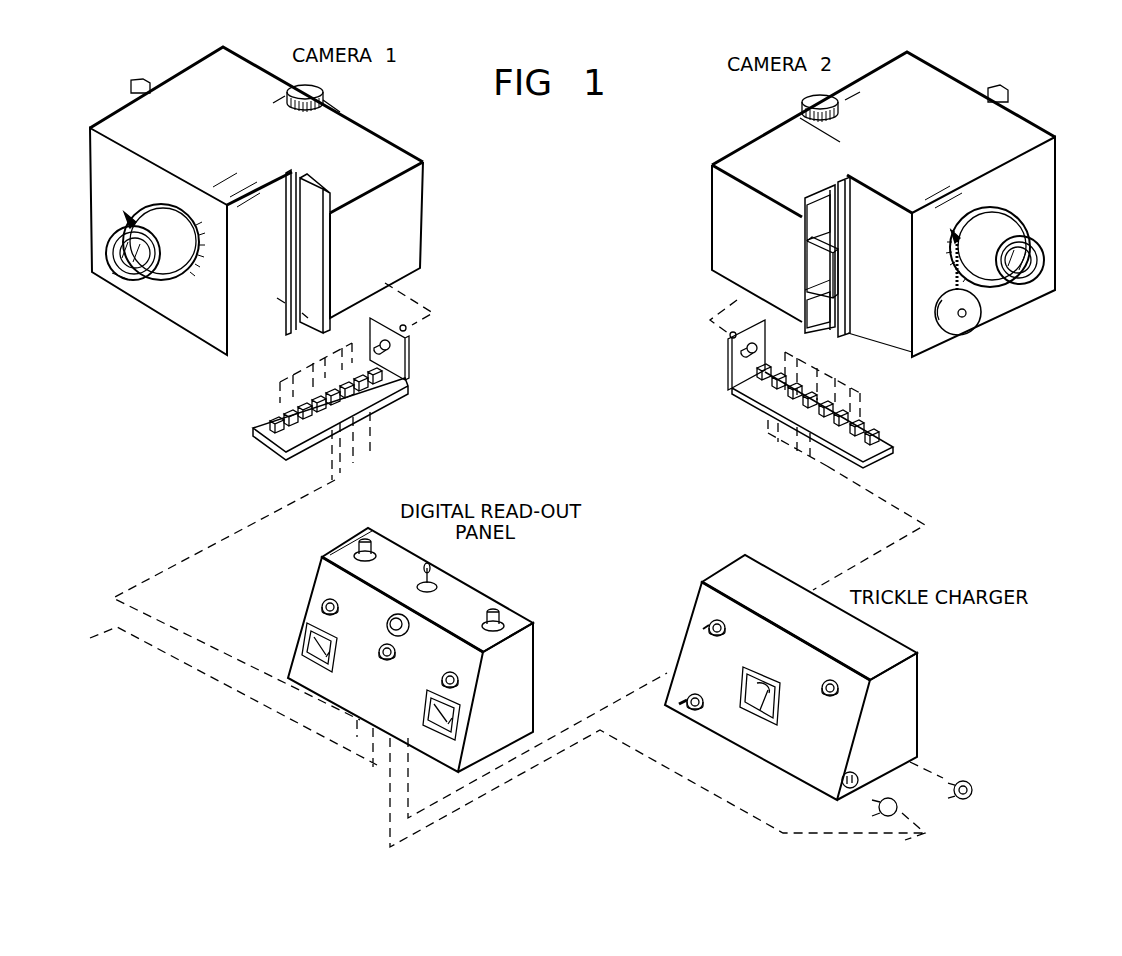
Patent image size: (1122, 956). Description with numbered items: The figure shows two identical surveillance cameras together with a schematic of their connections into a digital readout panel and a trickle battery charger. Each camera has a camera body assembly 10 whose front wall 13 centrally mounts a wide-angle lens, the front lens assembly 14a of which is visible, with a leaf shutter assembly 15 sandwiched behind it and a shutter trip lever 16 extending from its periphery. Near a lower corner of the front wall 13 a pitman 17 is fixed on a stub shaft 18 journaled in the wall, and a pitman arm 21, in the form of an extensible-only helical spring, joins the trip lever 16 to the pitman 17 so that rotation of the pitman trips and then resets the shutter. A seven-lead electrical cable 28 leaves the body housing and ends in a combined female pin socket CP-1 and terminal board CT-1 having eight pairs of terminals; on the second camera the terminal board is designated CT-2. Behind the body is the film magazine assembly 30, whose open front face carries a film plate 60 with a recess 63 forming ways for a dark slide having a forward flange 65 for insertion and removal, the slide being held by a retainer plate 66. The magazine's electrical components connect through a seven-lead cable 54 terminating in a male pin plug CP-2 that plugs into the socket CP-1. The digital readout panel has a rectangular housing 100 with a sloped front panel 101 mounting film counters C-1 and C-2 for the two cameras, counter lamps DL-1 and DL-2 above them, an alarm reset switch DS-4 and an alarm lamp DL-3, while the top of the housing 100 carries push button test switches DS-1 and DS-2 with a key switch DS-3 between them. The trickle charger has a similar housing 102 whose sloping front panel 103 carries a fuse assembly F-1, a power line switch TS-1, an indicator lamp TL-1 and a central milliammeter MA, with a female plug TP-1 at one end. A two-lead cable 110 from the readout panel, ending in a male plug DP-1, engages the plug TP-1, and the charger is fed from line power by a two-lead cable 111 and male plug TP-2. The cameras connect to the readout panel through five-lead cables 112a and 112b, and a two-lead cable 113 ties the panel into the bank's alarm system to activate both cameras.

The camera body assembly 10 is at (212, 156).
The front wall 13 is at (172, 316).
The front lens assembly 14a is at (130, 265).
The leaf shutter assembly 15 is at (195, 266).
The shutter trip lever 16 is at (127, 212).
The pitman 17 is at (960, 328).
The stub shaft 18 is at (970, 317).
The pitman arm 21 is at (955, 273).
The electrical cable 28 is at (343, 340).
The film magazine assembly 30 is at (388, 254).
The cable 54 is at (400, 293).
The film plate 60 is at (312, 178).
The recess 63 is at (813, 280).
The forward flange 65 is at (832, 270).
The retainer plate 66 is at (825, 212).
The rectangular housing 100 is at (528, 657).
The sloped front panel 101 is at (320, 573).
The housing 102 is at (900, 692).
The sloping front panel 103 is at (797, 767).
The cable 110 is at (533, 770).
The cable 111 is at (940, 767).
The cable 112a is at (230, 533).
The cable 112b is at (862, 560).
The cable 113 is at (243, 697).
The female pin socket CP-1 is at (390, 350).
The male pin plug CP-2 is at (408, 329).
The terminal board CT-1 is at (390, 388).
The terminal board CT-2 is at (893, 435).
The push button test switch DS-1 is at (360, 545).
The push button test switch DS-2 is at (500, 612).
The key switch DS-3 is at (433, 572).
The alarm reset switch DS-4 is at (395, 636).
The counter lamp DL-1 is at (322, 607).
The counter lamp DL-2 is at (460, 685).
The alarm lamp DL-3 is at (383, 660).
The film counter C-1 is at (303, 645).
The film counter C-2 is at (455, 728).
The fuse assembly F-1 is at (718, 631).
The power line switch TS-1 is at (695, 697).
The milliammeter MA is at (753, 710).
The indicator lamp TL-1 is at (825, 693).
The female plug TP-1 is at (853, 777).
The male plug TP-2 is at (972, 790).
The male plug DP-1 is at (897, 808).